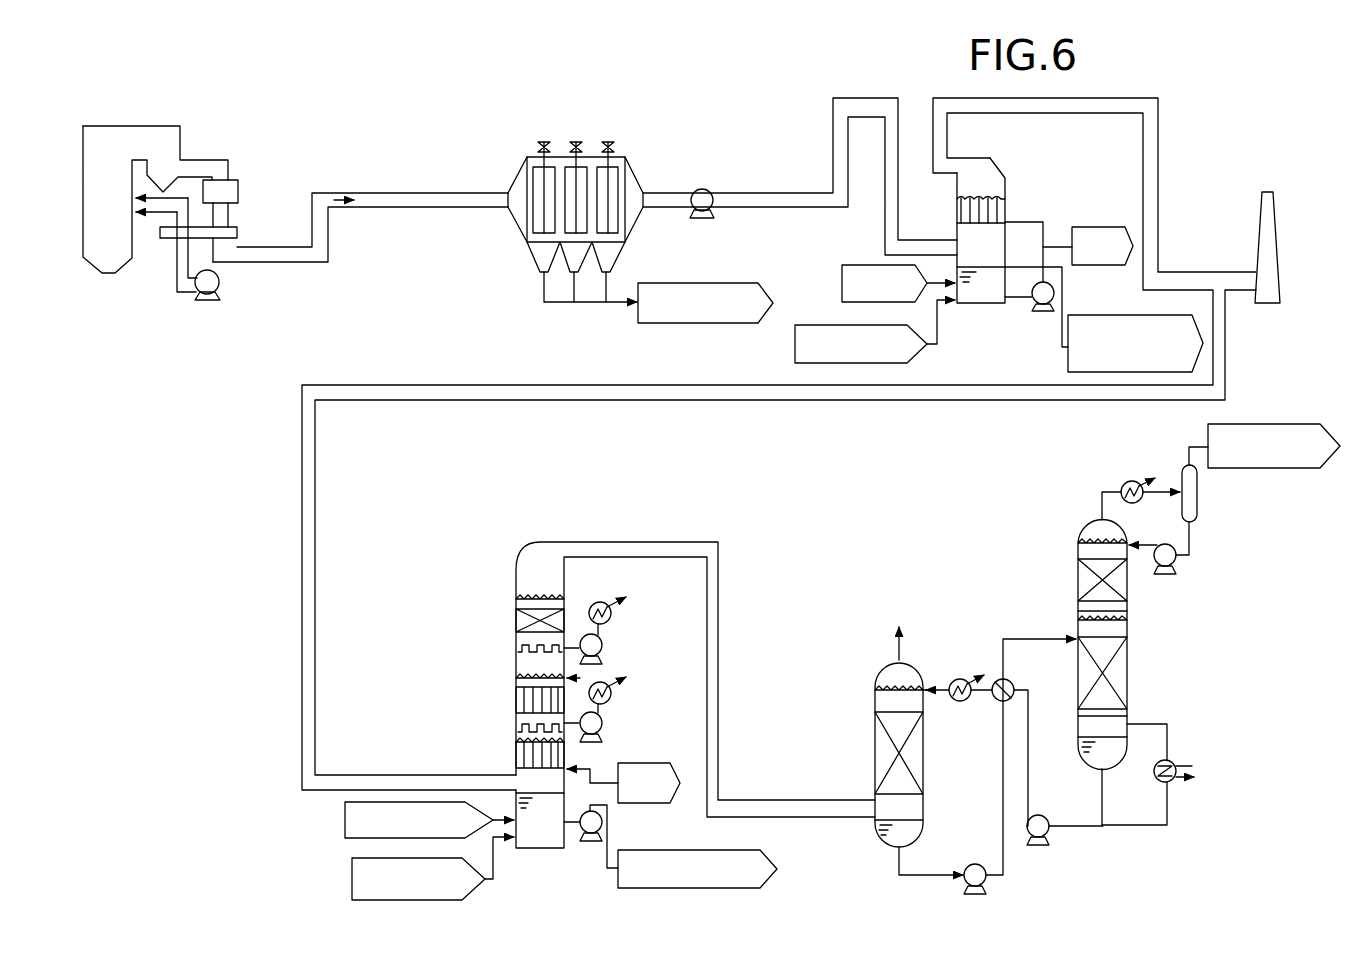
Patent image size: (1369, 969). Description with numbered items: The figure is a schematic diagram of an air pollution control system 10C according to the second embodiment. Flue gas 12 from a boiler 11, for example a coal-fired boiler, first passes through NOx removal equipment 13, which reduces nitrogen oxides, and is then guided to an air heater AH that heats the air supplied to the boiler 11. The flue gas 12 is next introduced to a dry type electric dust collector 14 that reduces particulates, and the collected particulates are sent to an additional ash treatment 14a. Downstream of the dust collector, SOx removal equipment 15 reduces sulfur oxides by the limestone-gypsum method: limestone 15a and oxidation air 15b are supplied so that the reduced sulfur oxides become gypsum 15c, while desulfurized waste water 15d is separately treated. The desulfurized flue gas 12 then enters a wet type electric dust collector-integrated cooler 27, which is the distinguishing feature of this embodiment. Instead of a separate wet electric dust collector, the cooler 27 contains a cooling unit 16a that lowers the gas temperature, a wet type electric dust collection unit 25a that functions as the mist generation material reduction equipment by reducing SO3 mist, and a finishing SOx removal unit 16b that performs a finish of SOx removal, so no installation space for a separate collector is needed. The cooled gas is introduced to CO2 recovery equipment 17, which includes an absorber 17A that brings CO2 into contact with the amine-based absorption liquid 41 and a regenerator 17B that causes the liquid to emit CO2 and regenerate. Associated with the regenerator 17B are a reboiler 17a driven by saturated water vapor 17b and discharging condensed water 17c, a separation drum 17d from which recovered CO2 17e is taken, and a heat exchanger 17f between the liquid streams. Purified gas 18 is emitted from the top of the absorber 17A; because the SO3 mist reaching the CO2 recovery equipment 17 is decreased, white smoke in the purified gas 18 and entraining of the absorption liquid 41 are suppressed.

The air pollution control system 10C is at (758, 87).
The boiler 11 is at (95, 114).
The flue gas 12 is at (338, 196).
The NOx removal equipment 13 is at (242, 188).
The dry type electric dust collector 14 is at (554, 117).
The ash treatment 14a is at (699, 270).
The air heater AH is at (240, 252).
The SOx removal equipment 15 is at (1006, 163).
The limestone 15a is at (842, 287).
The oxidation air 15b is at (795, 346).
The gypsum 15c is at (1085, 227).
The desulfurized waste water 15d is at (1100, 315).
The wet type electric dust collector-integrated cooler 27 is at (562, 521).
The cooling unit 16a is at (516, 619).
The wet type electric dust collection unit 25a is at (516, 702).
The finishing SOx removal unit 16b is at (516, 754).
The CO2 recovery equipment 17 is at (1067, 524).
The absorber 17A is at (920, 645).
The regenerator 17B is at (1058, 580).
The reboiler 17a is at (1172, 750).
The saturated water vapor 17b is at (1186, 763).
The condensed water 17c is at (1182, 787).
The separation drum 17d is at (1198, 492).
The recovered CO2 17e is at (1240, 424).
The heat exchanger 17f is at (1011, 682).
The purified gas 18 is at (893, 642).
The absorption liquid 41 is at (929, 669).